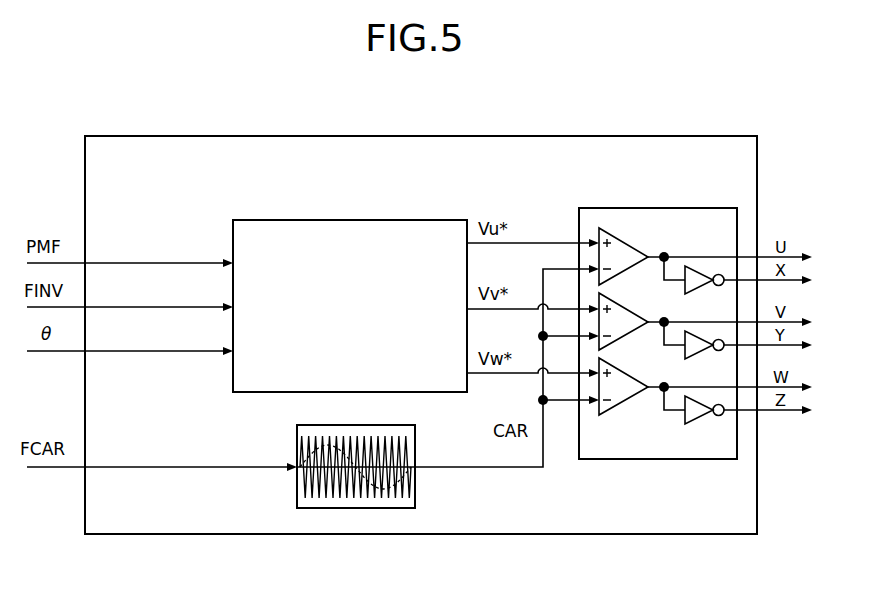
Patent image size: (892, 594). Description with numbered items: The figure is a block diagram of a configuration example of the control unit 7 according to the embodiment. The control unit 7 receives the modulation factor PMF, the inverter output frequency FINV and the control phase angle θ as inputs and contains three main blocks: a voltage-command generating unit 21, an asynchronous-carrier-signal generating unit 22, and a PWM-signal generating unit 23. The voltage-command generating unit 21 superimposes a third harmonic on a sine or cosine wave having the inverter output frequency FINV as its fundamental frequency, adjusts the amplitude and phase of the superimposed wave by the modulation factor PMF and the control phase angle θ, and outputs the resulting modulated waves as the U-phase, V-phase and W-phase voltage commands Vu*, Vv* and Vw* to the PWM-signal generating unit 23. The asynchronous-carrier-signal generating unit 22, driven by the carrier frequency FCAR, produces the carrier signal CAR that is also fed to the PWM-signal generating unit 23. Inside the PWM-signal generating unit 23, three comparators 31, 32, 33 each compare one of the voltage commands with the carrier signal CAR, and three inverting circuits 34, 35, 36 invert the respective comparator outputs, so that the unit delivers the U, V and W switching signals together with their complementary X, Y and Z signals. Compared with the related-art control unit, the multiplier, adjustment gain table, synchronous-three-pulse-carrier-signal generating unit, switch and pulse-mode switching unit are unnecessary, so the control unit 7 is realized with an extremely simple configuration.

The control unit 7 is at (616, 136).
The voltage-command generating unit 21 is at (390, 220).
The asynchronous-carrier-signal generating unit 22 is at (392, 424).
The PWM-signal generating unit 23 is at (685, 208).
The comparator 31 is at (619, 238).
The comparator 32 is at (619, 305).
The comparator 33 is at (619, 370).
The inverting circuit 34 is at (695, 292).
The inverting circuit 35 is at (695, 357).
The inverting circuit 36 is at (695, 422).